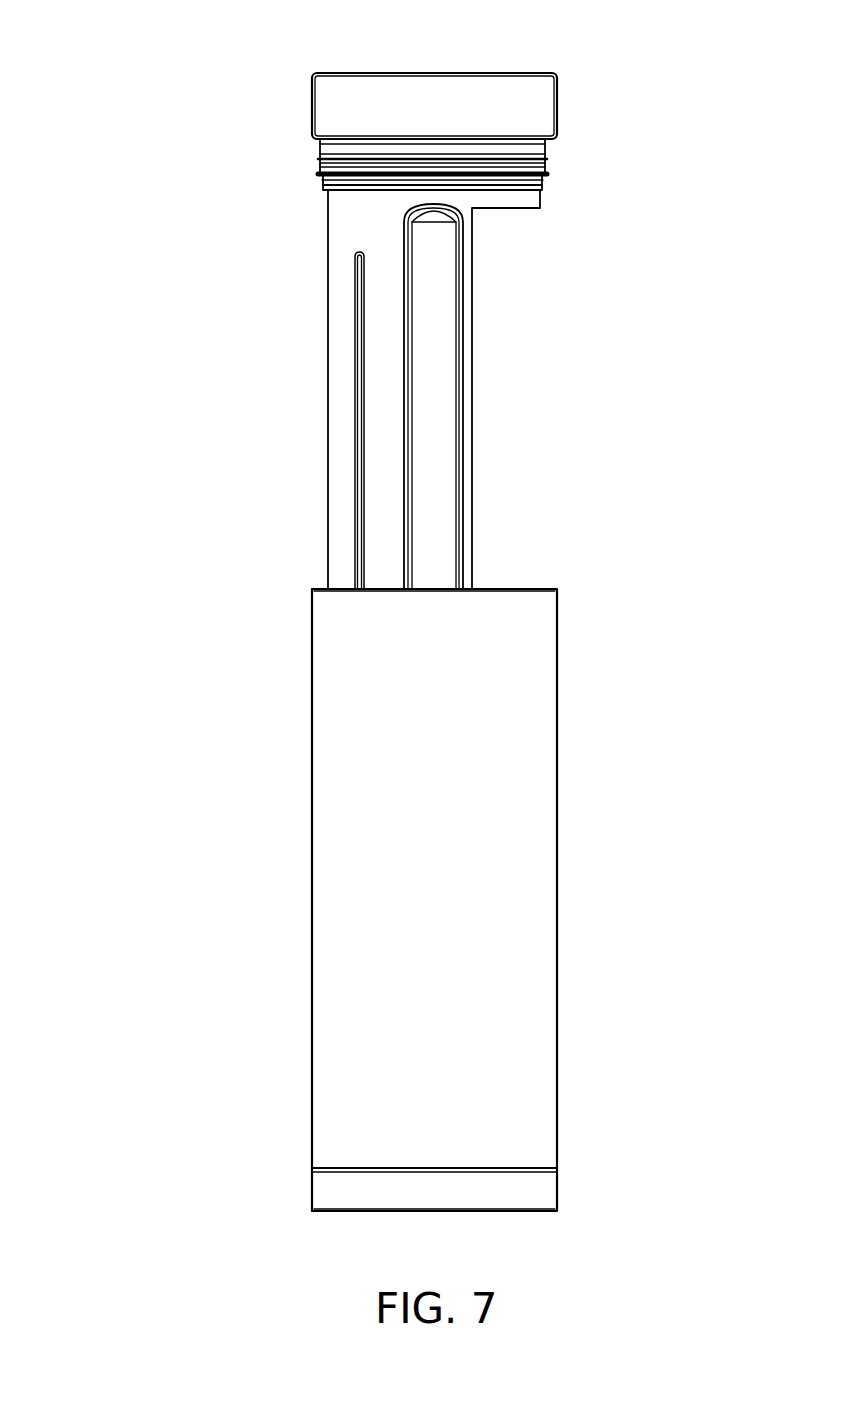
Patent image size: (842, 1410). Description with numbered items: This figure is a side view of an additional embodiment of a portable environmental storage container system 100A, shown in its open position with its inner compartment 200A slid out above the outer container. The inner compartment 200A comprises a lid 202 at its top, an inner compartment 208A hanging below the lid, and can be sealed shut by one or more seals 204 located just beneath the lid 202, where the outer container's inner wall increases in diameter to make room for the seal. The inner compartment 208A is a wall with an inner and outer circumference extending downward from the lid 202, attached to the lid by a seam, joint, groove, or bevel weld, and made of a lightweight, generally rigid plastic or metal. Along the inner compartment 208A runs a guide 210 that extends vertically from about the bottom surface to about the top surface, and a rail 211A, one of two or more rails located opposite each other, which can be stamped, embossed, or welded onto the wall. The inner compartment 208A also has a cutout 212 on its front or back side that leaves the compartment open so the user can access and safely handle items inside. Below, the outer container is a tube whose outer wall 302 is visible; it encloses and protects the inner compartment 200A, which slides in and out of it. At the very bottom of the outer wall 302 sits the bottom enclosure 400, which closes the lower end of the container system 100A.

The portable environmental storage container system 100A is at (278, 86).
The lid 202 is at (522, 105).
The seal 204 is at (522, 163).
The inner compartment 200A is at (520, 320).
The inner compartment 208A is at (370, 222).
The guide 210 is at (352, 483).
The rail 211A is at (433, 443).
The cutout 212 is at (475, 533).
The outer wall 302 is at (483, 835).
The bottom enclosure 400 is at (558, 1193).